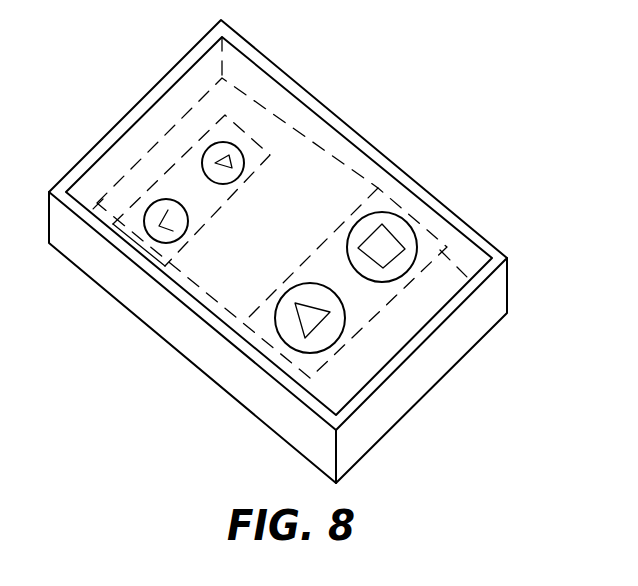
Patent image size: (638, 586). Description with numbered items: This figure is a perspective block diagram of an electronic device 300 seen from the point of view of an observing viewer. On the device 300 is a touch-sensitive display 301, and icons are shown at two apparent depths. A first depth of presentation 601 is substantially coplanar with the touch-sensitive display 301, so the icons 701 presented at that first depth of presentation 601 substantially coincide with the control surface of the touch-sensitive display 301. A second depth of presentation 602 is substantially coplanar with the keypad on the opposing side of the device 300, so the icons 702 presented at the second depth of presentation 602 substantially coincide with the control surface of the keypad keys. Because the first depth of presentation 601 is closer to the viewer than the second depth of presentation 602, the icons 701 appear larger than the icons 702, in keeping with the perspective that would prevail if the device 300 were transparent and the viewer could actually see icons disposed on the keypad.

The electronic device 300 is at (93, 258).
The touch-sensitive display 301 is at (317, 128).
The first depth of presentation 601 is at (266, 305).
The second depth of presentation 602 is at (264, 157).
The icons 701 is at (360, 226).
The icons 702 is at (237, 168).